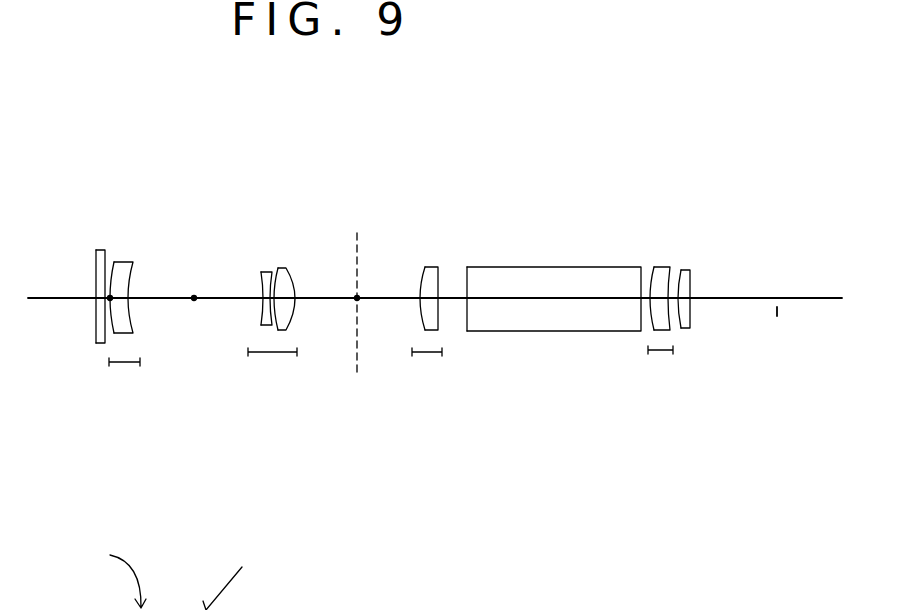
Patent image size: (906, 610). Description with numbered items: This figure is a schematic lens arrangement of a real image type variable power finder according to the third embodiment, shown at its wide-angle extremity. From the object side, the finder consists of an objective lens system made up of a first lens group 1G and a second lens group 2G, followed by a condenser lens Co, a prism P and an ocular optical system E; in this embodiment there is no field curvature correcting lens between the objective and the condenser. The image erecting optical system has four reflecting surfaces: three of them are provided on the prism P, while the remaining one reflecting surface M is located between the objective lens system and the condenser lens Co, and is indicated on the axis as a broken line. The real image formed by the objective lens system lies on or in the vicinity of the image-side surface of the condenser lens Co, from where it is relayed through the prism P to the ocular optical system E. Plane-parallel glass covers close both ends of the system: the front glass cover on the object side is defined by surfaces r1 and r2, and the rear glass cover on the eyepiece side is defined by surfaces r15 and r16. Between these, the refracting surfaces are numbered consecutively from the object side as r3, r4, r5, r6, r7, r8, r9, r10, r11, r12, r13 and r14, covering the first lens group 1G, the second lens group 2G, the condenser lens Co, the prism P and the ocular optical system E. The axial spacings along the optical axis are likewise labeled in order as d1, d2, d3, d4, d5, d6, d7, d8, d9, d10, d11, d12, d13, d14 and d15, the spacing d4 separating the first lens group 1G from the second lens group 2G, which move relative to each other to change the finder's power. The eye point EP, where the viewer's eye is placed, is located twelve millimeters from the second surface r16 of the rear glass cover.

The surface of front glass cover r1 is at (96, 250).
The surface of front glass cover r2 is at (108, 252).
The refracting surface r3 (second lens, object side) r3 is at (116, 262).
The refracting surface r4 (second lens, image side) r4 is at (134, 262).
The refracting surface r5 (third lens, object side) r5 is at (263, 272).
The refracting surface r6 (third lens, image side) r6 is at (274, 270).
The refracting surface r7 (fourth lens, object side) r7 is at (280, 268).
The refracting surface r8 (fourth lens, image side) r8 is at (285, 268).
The refracting surface r9 (condenser lens, object side) r9 is at (425, 267).
The refracting surface r10 (condenser lens, image side) r10 is at (438, 267).
The refracting surface r11 (prism entrance face) r11 is at (467, 267).
The refracting surface r12 (prism exit face) r12 is at (641, 267).
The refracting surface r13 (eyepiece first lens, object side) r13 is at (654, 267).
The refracting surface r14 (eyepiece first lens, eye side) r14 is at (668, 267).
The surface of rear glass cover r15 is at (681, 270).
The surface of rear glass cover r16 is at (690, 270).
The axial thickness d1 of first lens d1 is at (102, 343).
The axial air space d2 between first and second lenses d2 is at (130, 362).
The axial thickness d3 of second lens d3 is at (133, 333).
The variable axial air space d4 between first and second lens groups d4 is at (194, 298).
The axial thickness d5 of third lens d5 is at (267, 325).
The axial air space d6 between third and fourth lenses d6 is at (278, 330).
The axial thickness d7 of fourth lens d7 is at (313, 380).
The axial distance d8 from fourth lens to intermediate image plane d8 is at (350, 417).
The axial thickness d9 of condenser lens d9 is at (427, 330).
The axial air space d10 between condenser lens and prism d10 is at (450, 298).
The axial thickness d11 of prism d11 is at (547, 364).
The axial air space d12 between prism and eyepiece d12 is at (641, 331).
The axial thickness d13 of eyepiece first lens d13 is at (662, 330).
The axial air space d14 between eyepiece lenses d14 is at (683, 330).
The axial thickness d15 of eyepiece second lens d15 is at (723, 380).
The first lens group 1G is at (130, 373).
The second lens group 2G is at (280, 374).
The reflecting surface M is at (367, 326).
The condenser lens Co is at (420, 346).
The prism P is at (556, 284).
The ocular optical system E is at (699, 341).
The eye point EP is at (777, 291).